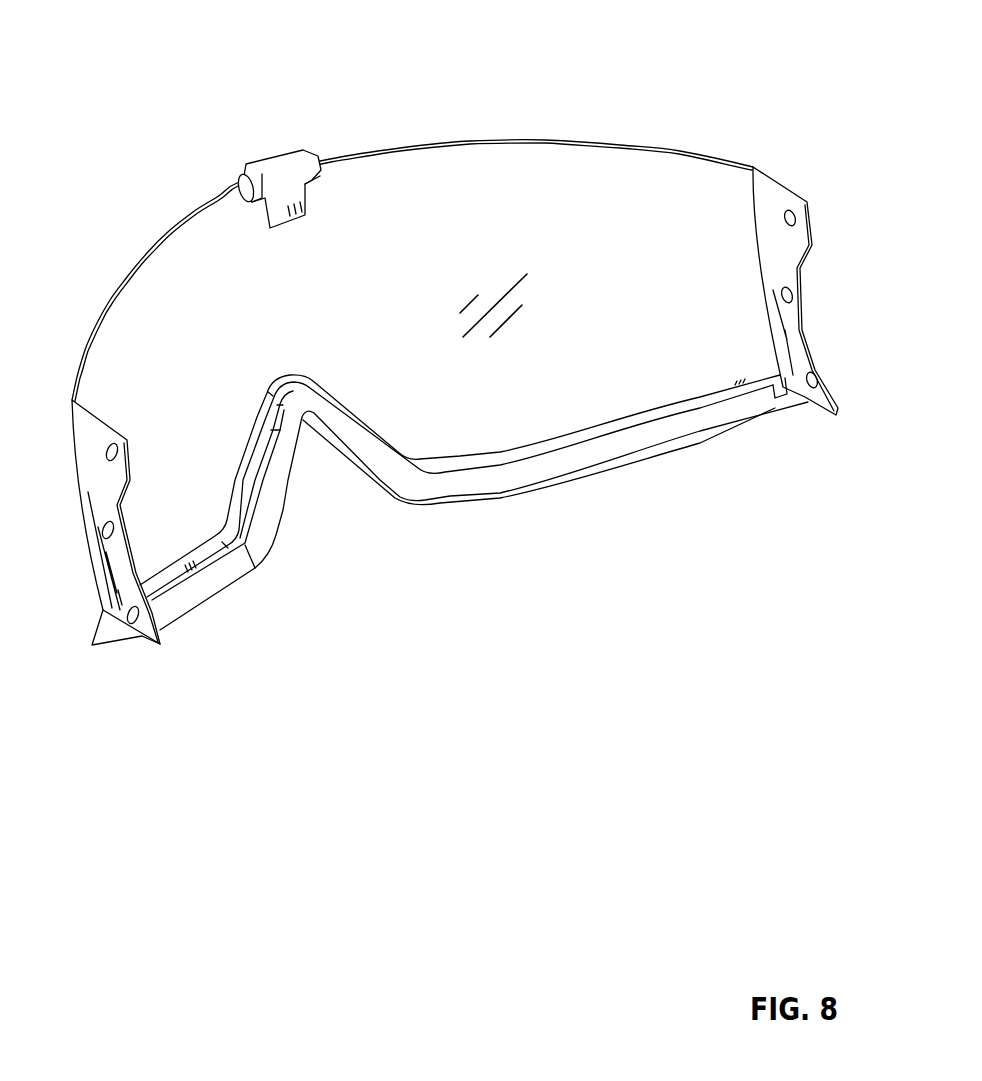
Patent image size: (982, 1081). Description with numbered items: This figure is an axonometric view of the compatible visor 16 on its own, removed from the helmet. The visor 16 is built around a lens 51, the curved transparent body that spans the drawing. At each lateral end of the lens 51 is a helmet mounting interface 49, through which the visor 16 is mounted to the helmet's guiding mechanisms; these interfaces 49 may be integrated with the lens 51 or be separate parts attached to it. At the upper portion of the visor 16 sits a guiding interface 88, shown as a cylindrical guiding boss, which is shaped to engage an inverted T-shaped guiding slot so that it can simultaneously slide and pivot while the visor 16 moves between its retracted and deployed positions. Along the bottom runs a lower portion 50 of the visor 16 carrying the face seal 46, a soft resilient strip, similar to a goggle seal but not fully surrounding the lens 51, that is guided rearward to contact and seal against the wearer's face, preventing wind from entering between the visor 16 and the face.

The visor 16 is at (449, 322).
The lens 51 is at (460, 172).
The guiding interface 88 is at (287, 150).
The helmet mounting interface 49 is at (90, 432).
The face seal 46 is at (568, 468).
The lower portion 50 is at (643, 393).